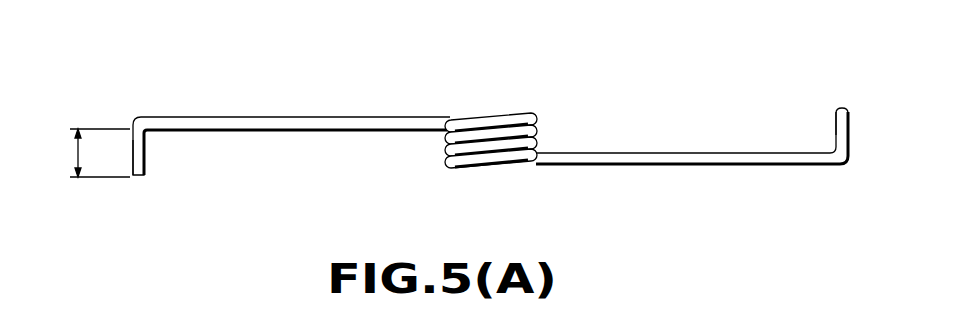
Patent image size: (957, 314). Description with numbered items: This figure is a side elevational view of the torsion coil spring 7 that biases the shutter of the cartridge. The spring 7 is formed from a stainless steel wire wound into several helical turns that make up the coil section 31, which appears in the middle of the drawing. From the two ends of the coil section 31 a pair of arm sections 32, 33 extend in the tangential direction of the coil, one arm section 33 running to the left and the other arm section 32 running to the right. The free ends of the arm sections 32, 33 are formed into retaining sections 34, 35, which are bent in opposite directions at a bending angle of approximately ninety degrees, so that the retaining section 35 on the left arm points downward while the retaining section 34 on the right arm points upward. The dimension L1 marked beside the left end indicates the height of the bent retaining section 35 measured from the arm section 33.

The torsion coil spring 7 is at (486, 86).
The coil section 31 is at (528, 113).
The arm section 32 is at (713, 168).
The arm section 33 is at (190, 119).
The retaining section 34 is at (836, 130).
The retaining section 35 is at (147, 166).
The length of bent end L1 is at (84, 153).